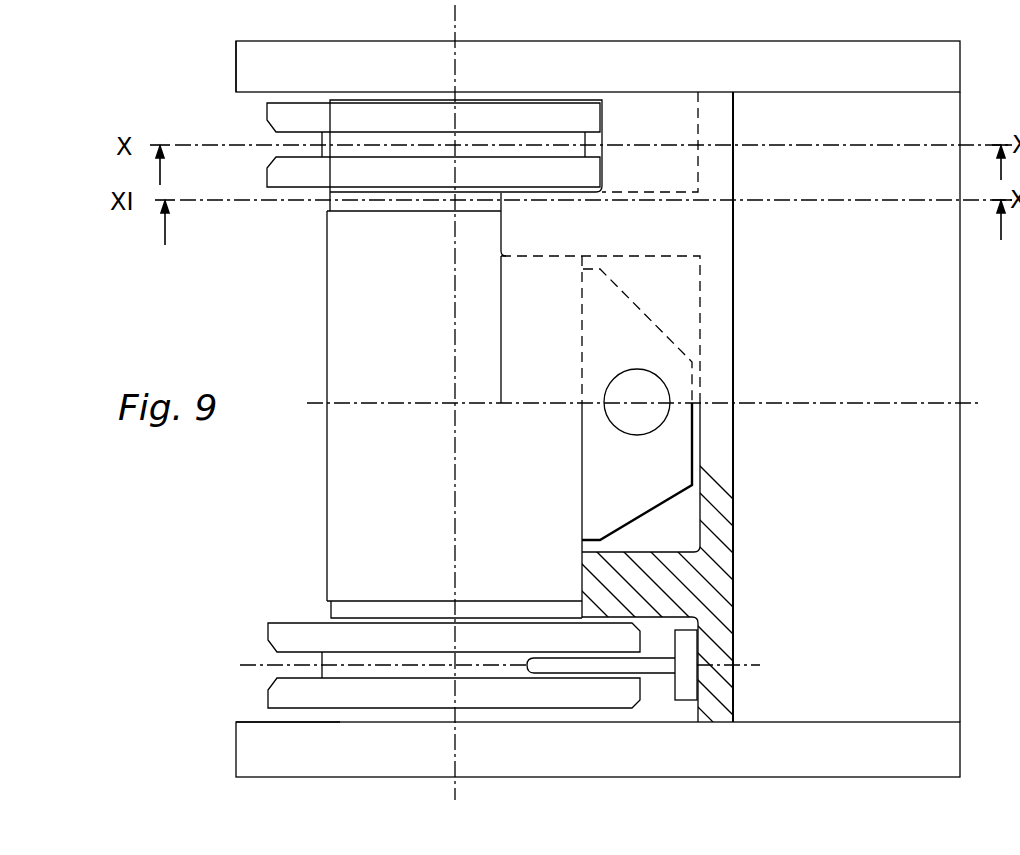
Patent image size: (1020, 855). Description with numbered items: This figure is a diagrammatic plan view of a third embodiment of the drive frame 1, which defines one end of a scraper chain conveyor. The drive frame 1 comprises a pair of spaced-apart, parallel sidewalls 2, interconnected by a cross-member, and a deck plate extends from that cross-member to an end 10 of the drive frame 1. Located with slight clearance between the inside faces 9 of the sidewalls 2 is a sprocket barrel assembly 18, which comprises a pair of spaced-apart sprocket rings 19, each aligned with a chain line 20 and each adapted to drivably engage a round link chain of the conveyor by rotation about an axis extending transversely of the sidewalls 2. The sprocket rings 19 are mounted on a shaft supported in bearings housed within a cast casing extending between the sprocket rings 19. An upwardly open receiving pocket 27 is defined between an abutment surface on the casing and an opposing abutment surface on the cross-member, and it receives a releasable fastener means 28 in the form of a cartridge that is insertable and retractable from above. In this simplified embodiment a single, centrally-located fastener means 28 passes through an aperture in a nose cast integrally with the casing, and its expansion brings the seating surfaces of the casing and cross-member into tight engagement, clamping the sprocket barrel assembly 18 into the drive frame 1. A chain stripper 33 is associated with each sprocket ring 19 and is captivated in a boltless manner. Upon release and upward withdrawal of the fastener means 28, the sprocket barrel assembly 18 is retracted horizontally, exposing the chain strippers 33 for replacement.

The drive frame 1 is at (226, 59).
The sidewall 2 is at (352, 77).
The inside face 9 is at (248, 722).
The end of the drive frame 10 is at (960, 355).
The sprocket barrel assembly 18 is at (318, 459).
The sprocket ring 19 is at (302, 177).
The chain line 20 is at (237, 143).
The receiving pocket 27 is at (685, 524).
The fastener means 28 is at (647, 418).
The chain stripper 33 is at (683, 697).